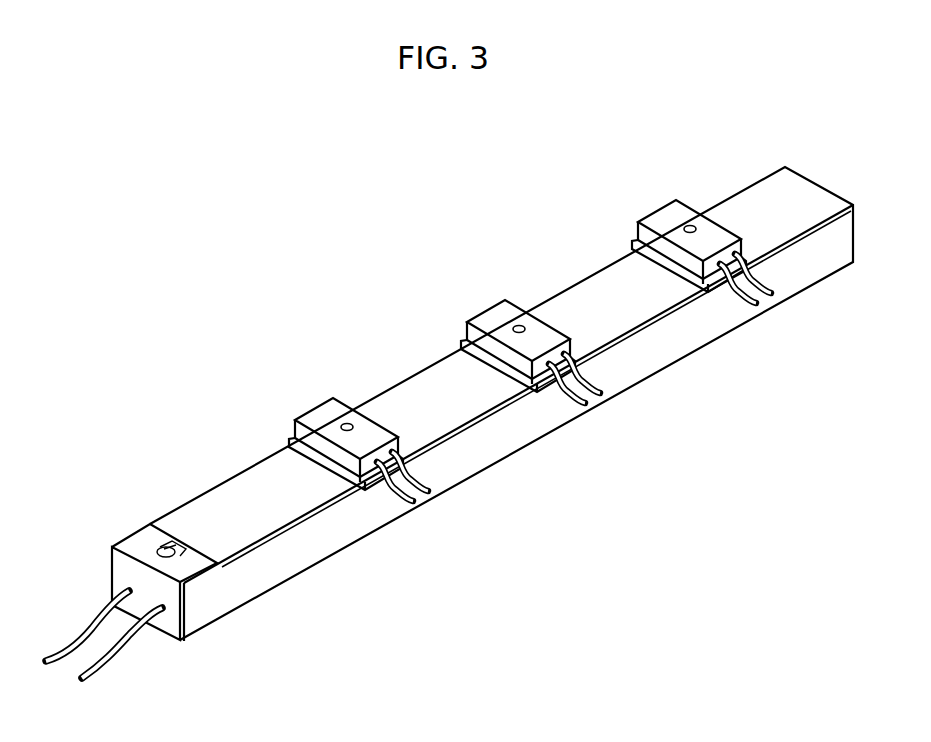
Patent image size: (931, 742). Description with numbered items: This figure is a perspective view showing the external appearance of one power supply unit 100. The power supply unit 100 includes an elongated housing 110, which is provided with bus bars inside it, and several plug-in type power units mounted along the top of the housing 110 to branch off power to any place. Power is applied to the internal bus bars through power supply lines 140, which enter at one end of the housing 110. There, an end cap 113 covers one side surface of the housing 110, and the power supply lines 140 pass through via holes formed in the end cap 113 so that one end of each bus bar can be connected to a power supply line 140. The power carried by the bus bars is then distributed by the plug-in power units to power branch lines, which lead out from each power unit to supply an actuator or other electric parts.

The power supply unit 100 is at (449, 409).
The housing 110 is at (270, 578).
The end cap 113 is at (113, 566).
The power supply lines 140 is at (122, 660).